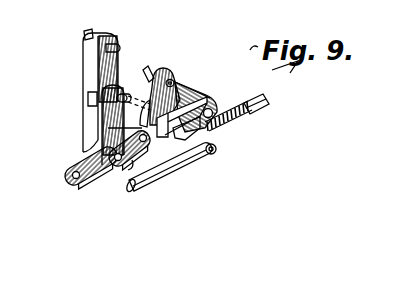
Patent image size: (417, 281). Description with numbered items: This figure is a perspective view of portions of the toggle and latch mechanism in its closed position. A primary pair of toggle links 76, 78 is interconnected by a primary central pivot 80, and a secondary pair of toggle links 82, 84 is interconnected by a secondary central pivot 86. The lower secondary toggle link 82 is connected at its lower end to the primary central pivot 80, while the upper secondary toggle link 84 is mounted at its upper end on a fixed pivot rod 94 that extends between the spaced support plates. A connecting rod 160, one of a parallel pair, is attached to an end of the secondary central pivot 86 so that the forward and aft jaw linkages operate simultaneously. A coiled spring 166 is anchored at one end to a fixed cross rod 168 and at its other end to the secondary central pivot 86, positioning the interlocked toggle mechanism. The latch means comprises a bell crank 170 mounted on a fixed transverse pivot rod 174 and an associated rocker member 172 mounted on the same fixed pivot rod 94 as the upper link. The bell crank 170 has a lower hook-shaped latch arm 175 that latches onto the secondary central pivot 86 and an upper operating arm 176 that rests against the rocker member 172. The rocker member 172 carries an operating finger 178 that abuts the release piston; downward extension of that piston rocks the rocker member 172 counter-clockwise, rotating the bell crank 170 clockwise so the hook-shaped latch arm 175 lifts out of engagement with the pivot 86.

The primary toggle link 76 is at (68, 178).
The primary toggle link 78 is at (128, 170).
The primary central pivot 80 is at (125, 162).
The lower secondary toggle link 82 is at (93, 122).
The upper secondary toggle link 84 is at (90, 66).
The secondary central pivot 86 is at (124, 100).
The fixed pivot rod 94 is at (149, 68).
The connecting rod 160 is at (147, 187).
The coiled spring 166 is at (242, 118).
The fixed cross rod 168 is at (268, 103).
The bell crank 170 is at (214, 92).
The rocker member 172 is at (165, 68).
The fixed transverse pivot rod 174 is at (210, 109).
The hook-shaped latch arm 175 is at (170, 128).
The upper operating arm 176 is at (190, 90).
The operating finger 178 is at (140, 126).